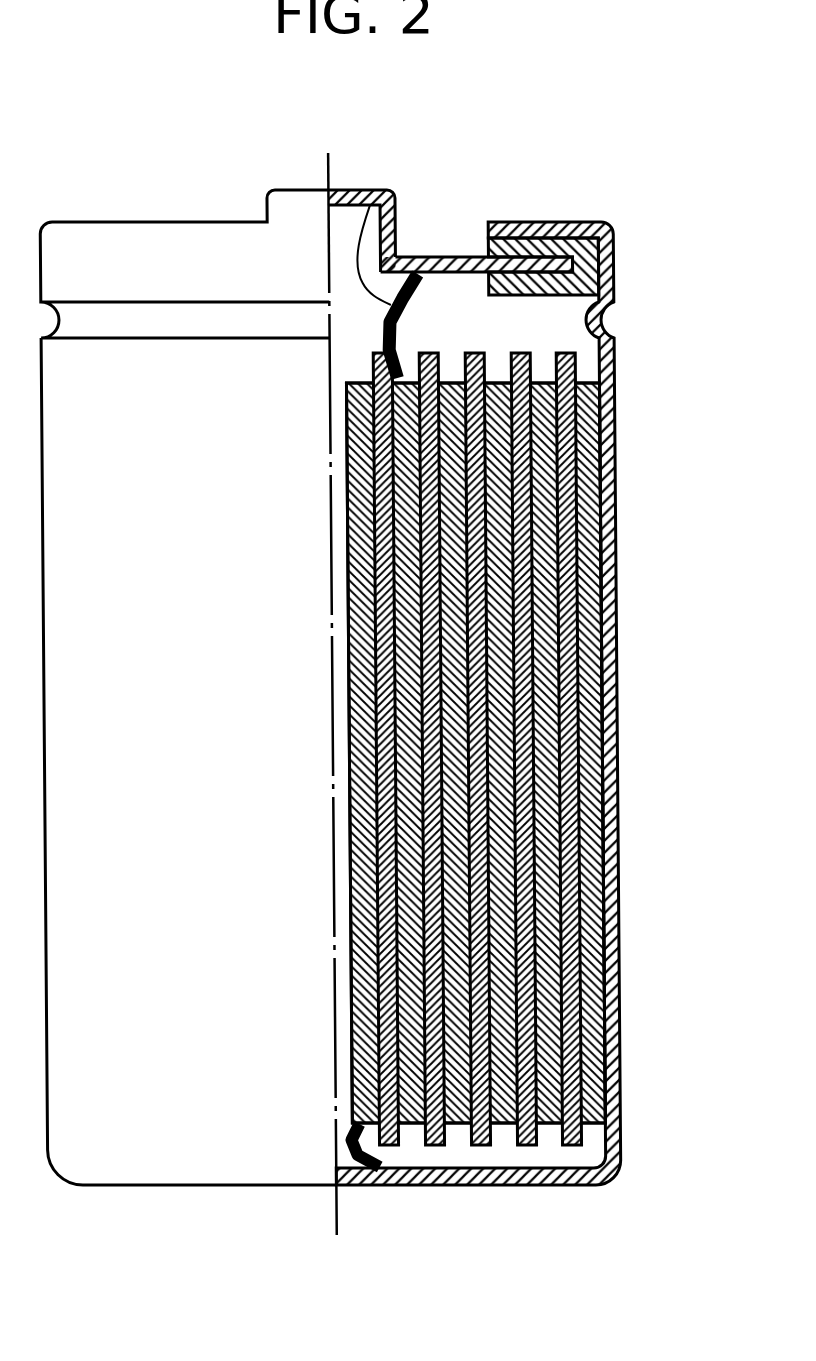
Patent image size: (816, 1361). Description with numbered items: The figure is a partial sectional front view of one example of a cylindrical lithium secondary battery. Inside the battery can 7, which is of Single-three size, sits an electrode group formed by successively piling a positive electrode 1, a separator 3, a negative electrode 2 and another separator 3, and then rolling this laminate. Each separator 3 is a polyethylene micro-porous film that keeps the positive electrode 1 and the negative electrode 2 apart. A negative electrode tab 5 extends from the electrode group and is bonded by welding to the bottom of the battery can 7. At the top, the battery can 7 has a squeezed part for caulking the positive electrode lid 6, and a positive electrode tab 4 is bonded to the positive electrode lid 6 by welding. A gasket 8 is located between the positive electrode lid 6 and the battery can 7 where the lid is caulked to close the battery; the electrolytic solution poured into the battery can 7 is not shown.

The positive electrode 1 is at (581, 1072).
The negative electrode 2 is at (532, 1113).
The separator 3 is at (427, 1150).
The positive electrode tab 4 is at (372, 190).
The negative electrode tab 5 is at (349, 1180).
The positive electrode lid 6 is at (461, 257).
The battery can 7 is at (612, 535).
The gasket 8 is at (603, 222).